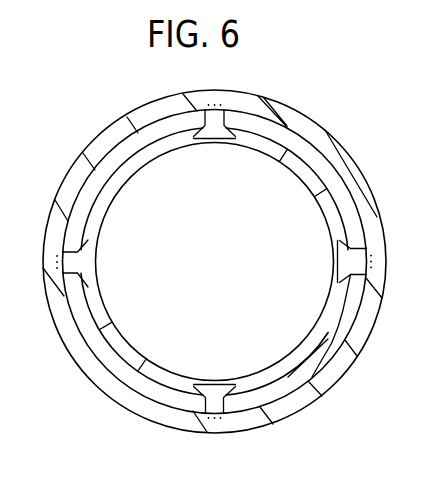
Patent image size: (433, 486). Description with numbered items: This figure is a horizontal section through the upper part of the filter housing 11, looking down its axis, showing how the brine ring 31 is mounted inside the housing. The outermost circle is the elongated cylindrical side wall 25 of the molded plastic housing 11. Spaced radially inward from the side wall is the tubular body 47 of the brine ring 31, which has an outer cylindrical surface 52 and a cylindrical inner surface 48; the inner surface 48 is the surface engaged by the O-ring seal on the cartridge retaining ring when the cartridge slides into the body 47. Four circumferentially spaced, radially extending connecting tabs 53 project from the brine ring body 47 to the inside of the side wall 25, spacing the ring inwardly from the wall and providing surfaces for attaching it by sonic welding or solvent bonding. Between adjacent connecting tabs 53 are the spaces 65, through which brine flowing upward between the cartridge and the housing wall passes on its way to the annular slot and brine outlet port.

The filter housing 11 is at (250, 100).
The cylindrical side wall 25 is at (158, 108).
The brine ring 31 is at (101, 196).
The tubular body 47 is at (118, 348).
The cylindrical inner surface 48 is at (317, 208).
The outer cylindrical surface 52 is at (72, 227).
The connecting tabs 53 is at (213, 110).
The spaces 65 is at (323, 168).